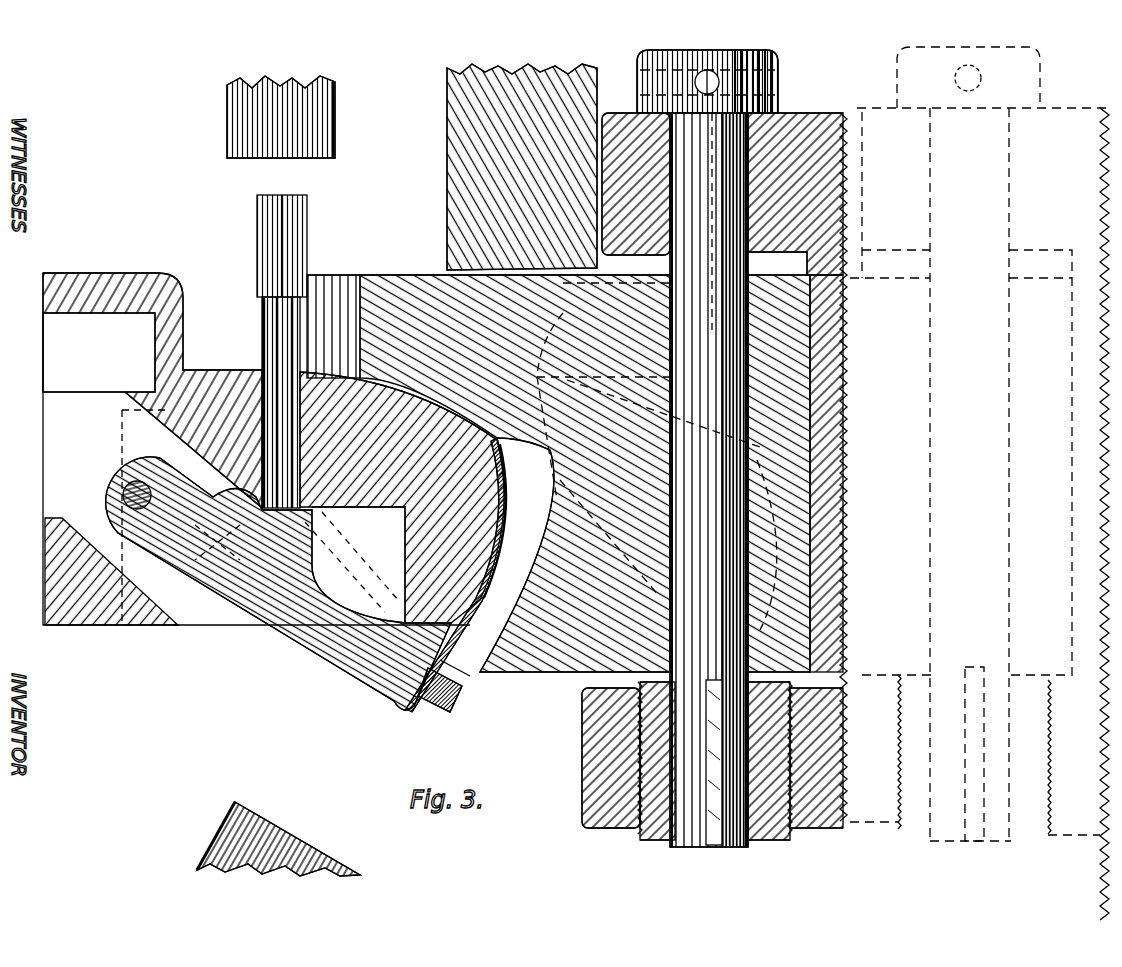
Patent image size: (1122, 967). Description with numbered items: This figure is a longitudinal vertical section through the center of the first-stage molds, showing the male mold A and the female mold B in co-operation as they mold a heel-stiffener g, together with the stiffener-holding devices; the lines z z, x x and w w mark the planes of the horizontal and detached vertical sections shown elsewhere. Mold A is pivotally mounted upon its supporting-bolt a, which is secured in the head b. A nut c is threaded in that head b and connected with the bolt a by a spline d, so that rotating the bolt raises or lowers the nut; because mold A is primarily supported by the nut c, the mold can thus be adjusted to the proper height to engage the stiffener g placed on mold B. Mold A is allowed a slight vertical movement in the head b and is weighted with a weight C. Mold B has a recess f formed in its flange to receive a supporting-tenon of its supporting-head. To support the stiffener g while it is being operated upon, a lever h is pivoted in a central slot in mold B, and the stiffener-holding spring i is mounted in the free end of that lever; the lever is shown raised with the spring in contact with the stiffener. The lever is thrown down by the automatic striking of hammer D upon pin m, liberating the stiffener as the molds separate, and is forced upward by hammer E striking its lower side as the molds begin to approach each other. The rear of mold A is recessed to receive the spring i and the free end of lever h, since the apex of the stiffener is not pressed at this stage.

The male mold A is at (427, 303).
The female mold B is at (238, 384).
The weight C is at (458, 164).
The hammer D is at (334, 120).
The hammer E is at (290, 840).
The supporting-bolt a is at (648, 82).
The head b is at (814, 122).
The nut c is at (648, 844).
The spline d is at (712, 847).
The recess f is at (99, 352).
The stiffener g is at (505, 459).
The stiffener-holding spring i is at (478, 582).
The lever h is at (357, 652).
The pin m is at (272, 323).
The section line w w is at (213, 332).
The section line x x is at (282, 112).
The section line z z is at (62, 444).